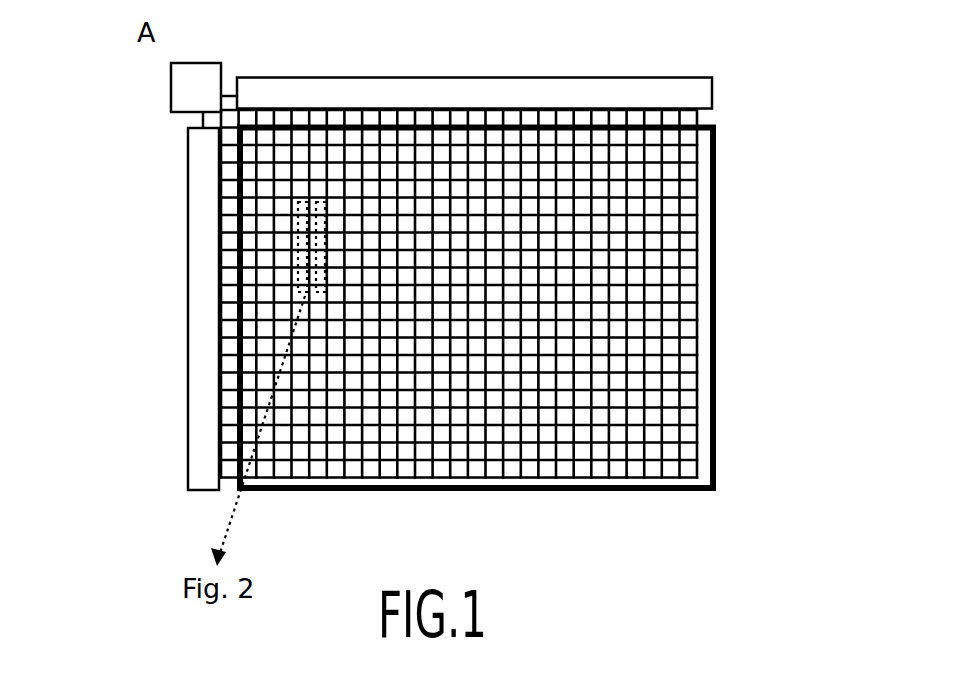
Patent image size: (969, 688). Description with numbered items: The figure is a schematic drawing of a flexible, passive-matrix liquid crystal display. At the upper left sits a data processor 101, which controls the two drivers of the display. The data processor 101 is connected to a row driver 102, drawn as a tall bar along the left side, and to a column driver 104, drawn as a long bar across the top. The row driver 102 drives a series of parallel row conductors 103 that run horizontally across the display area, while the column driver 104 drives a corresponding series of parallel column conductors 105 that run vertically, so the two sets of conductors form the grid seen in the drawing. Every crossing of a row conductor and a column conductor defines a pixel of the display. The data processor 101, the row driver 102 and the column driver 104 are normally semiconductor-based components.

The data processor 101 is at (206, 73).
The row driver 102 is at (195, 282).
The row conductors 103 is at (230, 348).
The column driver 104 is at (532, 93).
The column conductors 105 is at (697, 115).